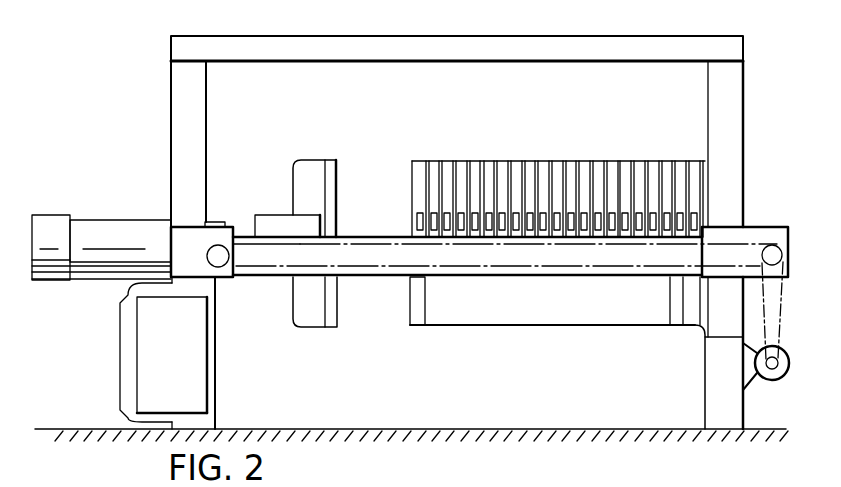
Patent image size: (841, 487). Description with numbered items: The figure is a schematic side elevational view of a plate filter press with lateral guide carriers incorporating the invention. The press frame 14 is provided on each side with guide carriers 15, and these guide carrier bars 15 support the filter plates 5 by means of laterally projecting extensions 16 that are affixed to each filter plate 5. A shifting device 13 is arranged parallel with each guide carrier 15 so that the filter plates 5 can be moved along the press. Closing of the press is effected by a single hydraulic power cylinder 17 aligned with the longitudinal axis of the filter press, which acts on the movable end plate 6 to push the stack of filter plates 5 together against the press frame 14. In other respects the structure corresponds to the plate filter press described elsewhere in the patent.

The filter plates 5 is at (533, 171).
The movable end plate 6 is at (302, 183).
The shifting device 13 is at (367, 268).
The press frame 14 is at (735, 80).
The guide carriers 15 is at (601, 253).
The laterally projecting extensions 16 is at (418, 224).
The hydraulic cylinder 17 is at (107, 232).